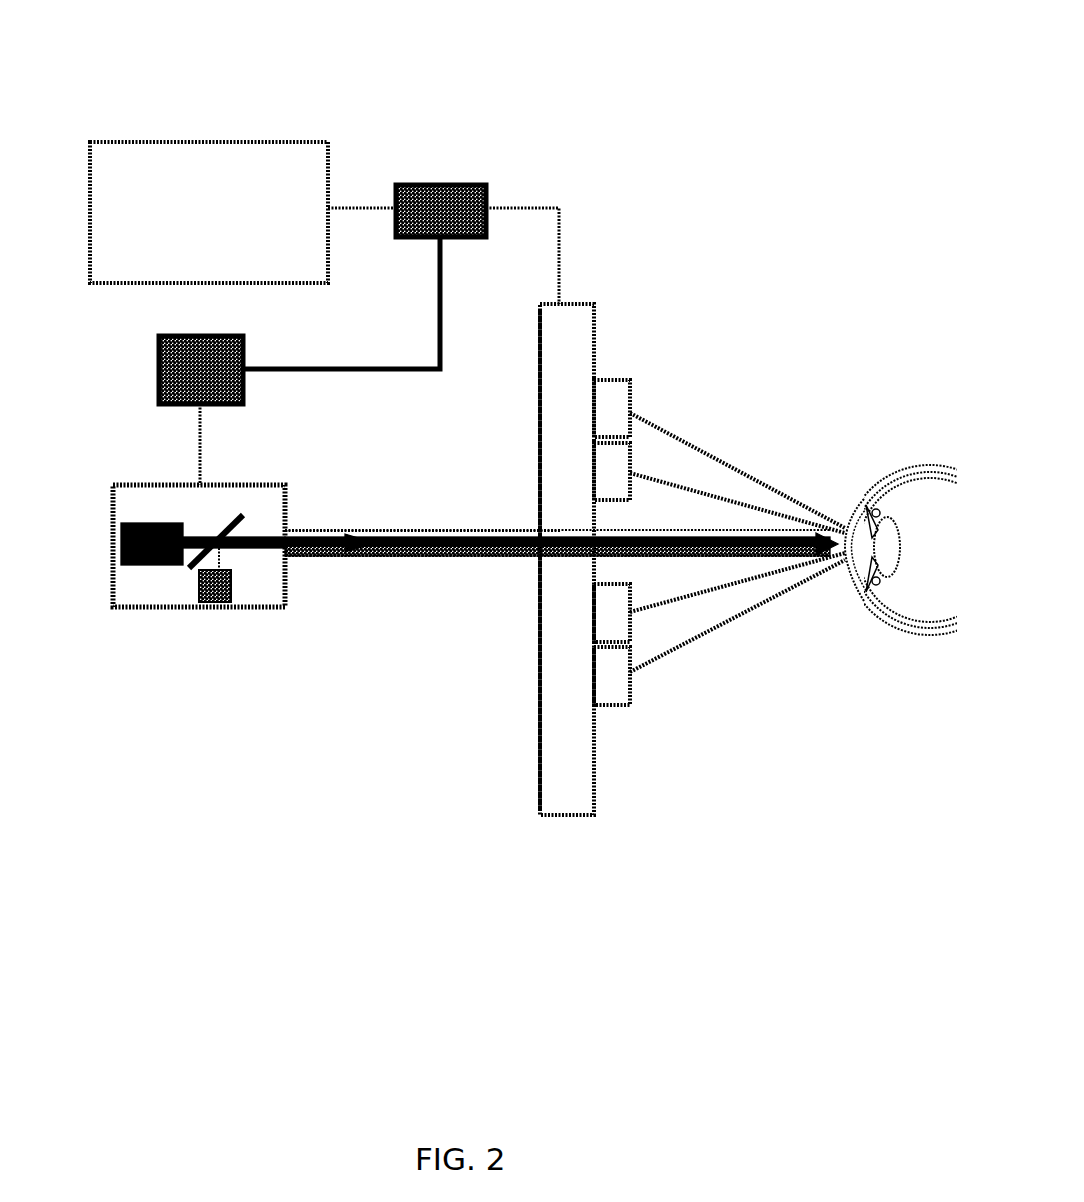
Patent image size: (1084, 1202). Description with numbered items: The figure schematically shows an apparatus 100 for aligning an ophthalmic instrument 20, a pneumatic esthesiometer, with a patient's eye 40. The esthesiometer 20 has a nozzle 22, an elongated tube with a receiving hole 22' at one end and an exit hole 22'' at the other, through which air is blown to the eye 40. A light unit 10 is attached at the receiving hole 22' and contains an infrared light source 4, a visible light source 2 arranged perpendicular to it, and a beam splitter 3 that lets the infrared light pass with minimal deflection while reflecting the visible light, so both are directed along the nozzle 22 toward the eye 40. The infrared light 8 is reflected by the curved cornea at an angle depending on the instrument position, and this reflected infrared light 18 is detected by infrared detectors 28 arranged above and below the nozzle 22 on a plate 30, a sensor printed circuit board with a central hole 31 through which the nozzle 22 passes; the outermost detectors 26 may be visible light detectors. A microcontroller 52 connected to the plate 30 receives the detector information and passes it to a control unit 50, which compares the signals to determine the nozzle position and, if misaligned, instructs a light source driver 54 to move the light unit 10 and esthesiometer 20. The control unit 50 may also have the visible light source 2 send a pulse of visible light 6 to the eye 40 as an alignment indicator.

The apparatus 100 is at (647, 137).
The control unit 50 is at (233, 168).
The microcontroller 52 is at (435, 195).
The light source driver 54 is at (190, 365).
The light unit 10 is at (262, 628).
The infrared light source 4 is at (149, 563).
The beam splitter 3 is at (238, 512).
The visible light source 2 is at (218, 603).
The infrared light 8 is at (475, 540).
The visible light 6 is at (340, 560).
The nozzle 22 is at (557, 622).
The receiving hole 22' is at (422, 476).
The exit hole 22'' is at (734, 628).
The ophthalmic instrument 20 is at (405, 591).
The plate 30 is at (575, 800).
The central hole 31 is at (540, 527).
The reflected infrared light 18 is at (700, 450).
The outermost detectors 26 is at (610, 682).
The infrared detectors 28 is at (616, 615).
The eye 40 is at (860, 530).